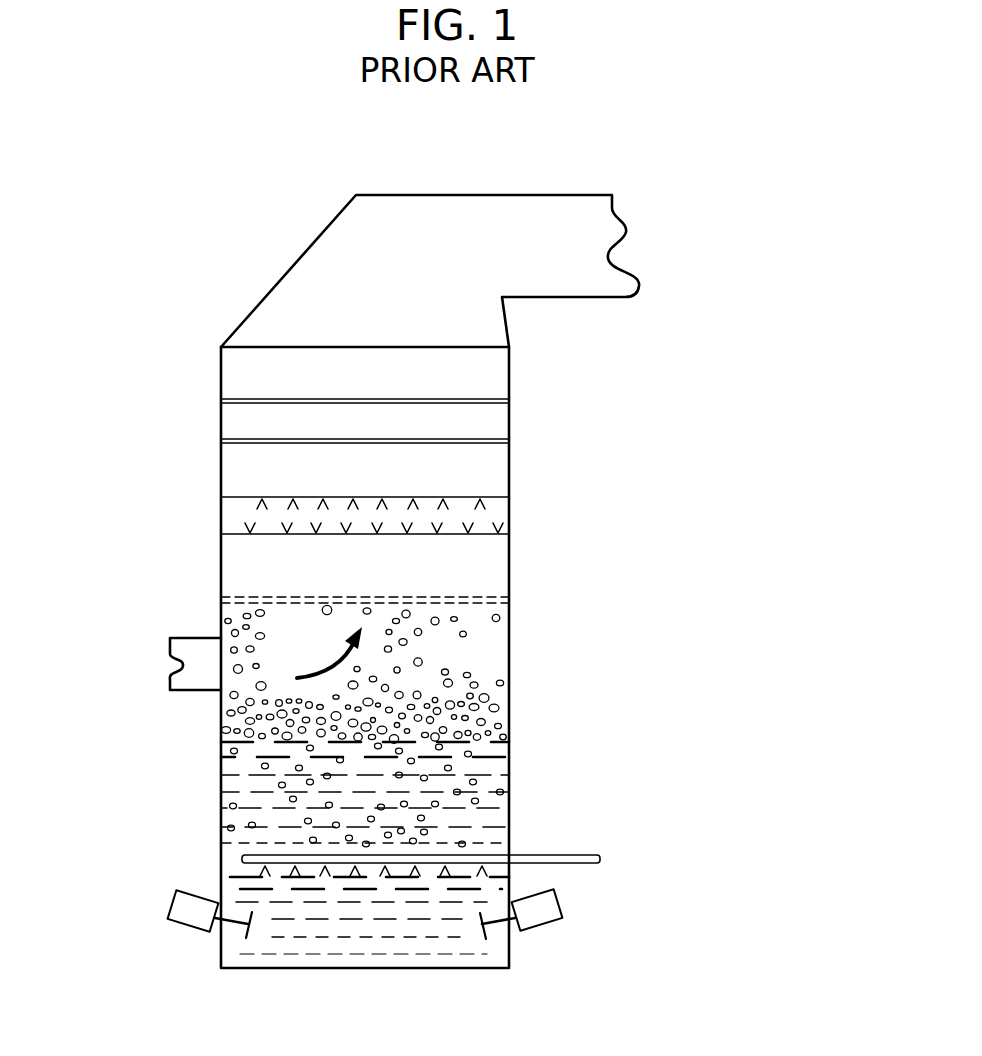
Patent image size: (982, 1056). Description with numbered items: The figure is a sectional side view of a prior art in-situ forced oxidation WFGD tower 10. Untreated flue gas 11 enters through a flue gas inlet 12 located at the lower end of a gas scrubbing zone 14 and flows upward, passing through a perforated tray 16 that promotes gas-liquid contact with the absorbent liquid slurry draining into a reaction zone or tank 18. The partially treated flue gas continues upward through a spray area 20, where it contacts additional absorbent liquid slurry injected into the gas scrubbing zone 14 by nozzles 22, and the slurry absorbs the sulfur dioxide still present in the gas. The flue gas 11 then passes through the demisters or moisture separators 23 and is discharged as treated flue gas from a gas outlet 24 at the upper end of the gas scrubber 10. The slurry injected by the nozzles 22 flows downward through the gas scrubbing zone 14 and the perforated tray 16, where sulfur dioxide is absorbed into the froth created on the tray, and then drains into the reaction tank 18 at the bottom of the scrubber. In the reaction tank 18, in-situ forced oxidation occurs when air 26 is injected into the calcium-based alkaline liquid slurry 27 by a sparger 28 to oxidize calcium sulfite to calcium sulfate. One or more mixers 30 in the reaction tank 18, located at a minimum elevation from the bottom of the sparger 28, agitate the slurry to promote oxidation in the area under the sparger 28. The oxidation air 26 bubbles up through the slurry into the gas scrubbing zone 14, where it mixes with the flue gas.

The in-situ forced oxidation WFGD tower 10 is at (152, 510).
The untreated flue gas 11 is at (327, 667).
The flue gas inlet 12 is at (168, 663).
The gas scrubbing zone 14 is at (370, 574).
The perforated tray 16 is at (482, 597).
The reaction zone or tank 18 is at (343, 806).
The spray area 20 is at (500, 515).
The nozzles 22 is at (490, 504).
The demisters or moisture separators 23 is at (495, 420).
The gas outlet 24 is at (630, 264).
The air 26 is at (416, 672).
The calcium-based alkaline liquid slurry 27 is at (284, 910).
The sparger 28 is at (382, 878).
The mixers 30 is at (540, 928).